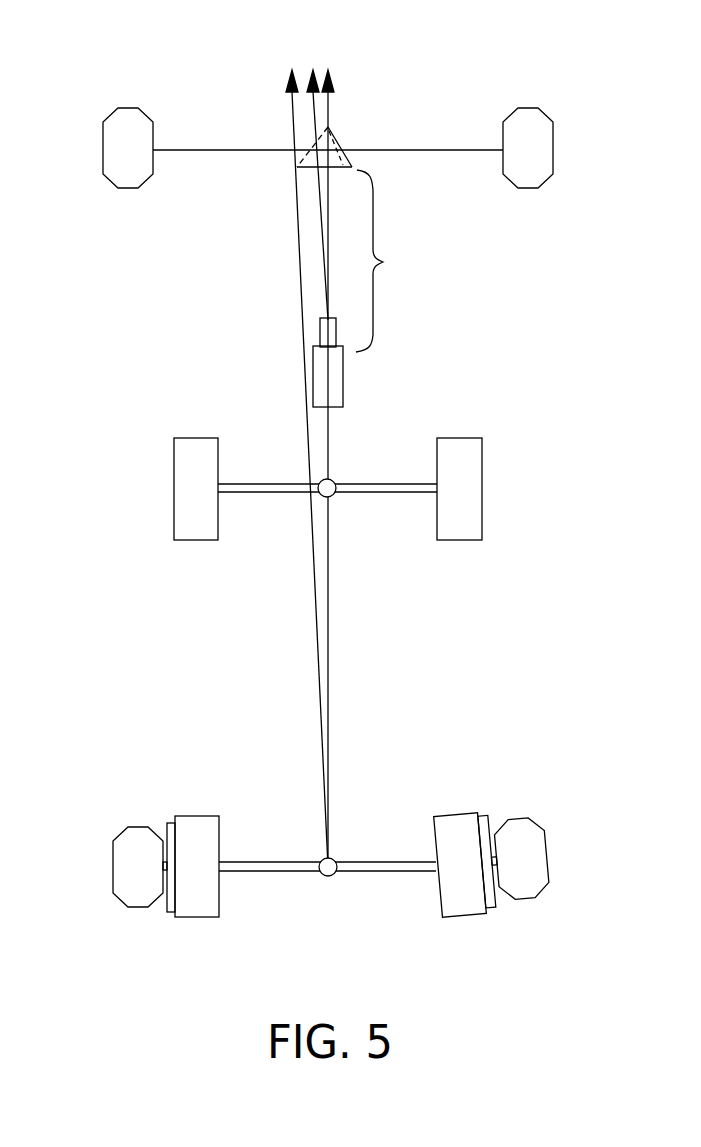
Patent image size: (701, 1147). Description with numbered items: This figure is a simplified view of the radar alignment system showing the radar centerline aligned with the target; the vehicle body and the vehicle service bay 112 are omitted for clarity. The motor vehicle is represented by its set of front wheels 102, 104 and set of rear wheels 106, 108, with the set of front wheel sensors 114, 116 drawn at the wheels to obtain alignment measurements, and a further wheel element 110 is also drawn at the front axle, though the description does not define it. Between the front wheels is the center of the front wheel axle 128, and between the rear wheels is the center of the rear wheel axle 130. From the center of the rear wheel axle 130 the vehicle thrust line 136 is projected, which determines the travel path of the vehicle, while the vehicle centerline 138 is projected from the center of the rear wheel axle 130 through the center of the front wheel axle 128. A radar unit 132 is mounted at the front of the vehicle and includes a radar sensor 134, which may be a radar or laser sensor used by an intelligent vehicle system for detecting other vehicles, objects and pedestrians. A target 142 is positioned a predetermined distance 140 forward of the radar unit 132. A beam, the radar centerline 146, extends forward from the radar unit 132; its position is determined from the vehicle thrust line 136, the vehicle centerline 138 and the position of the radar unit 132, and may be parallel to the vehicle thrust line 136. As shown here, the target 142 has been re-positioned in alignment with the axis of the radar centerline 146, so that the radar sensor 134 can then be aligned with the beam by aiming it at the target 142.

The front wheel 102 is at (178, 492).
The front wheel 104 is at (478, 488).
The rear wheel 106 is at (174, 915).
The rear wheel 108 is at (470, 912).
The front wheel 110 is at (103, 150).
The vehicle service bay 112 is at (553, 150).
The front wheel sensor 114 is at (118, 862).
The front wheel sensor 116 is at (540, 853).
The center of front wheel axle 128 is at (336, 480).
The center of rear wheel axle 130 is at (333, 858).
The radar unit 132 is at (343, 398).
The radar sensor 134 is at (320, 335).
The vehicle thrust line 136 is at (290, 112).
The vehicle centerline 138 is at (333, 107).
The predetermined distance 140 is at (178, 148).
The target 142 is at (342, 137).
The radar centerline 146 is at (306, 67).